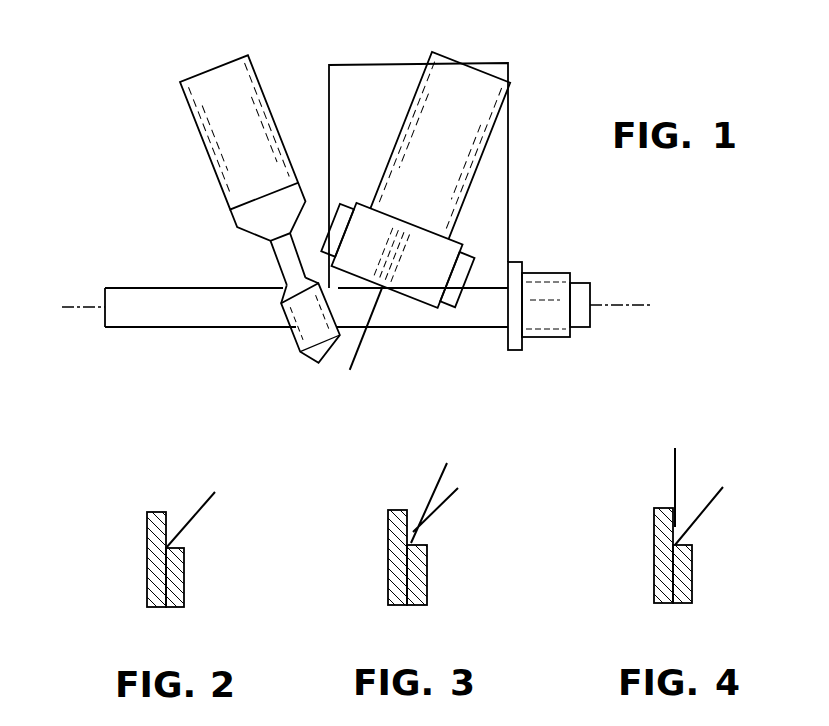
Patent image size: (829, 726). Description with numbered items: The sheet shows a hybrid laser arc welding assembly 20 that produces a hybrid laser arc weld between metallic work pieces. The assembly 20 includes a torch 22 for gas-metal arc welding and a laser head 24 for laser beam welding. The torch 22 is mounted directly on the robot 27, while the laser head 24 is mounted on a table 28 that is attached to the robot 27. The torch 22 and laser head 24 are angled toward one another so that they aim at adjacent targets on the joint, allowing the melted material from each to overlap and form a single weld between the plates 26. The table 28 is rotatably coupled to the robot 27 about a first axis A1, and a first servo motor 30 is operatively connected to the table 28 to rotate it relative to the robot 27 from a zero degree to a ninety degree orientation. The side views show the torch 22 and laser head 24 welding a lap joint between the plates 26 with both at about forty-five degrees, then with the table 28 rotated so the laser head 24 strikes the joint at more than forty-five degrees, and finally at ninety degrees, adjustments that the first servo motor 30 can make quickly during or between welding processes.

In FIG. 1, the hybrid laser arc welding assembly 20 is at (524, 74).
In FIG. 1, the torch 22 is at (203, 127).
In FIG. 1, the laser head 24 is at (462, 241).
In FIG. 2, the plates 26 is at (178, 598).
In FIG. 3, the plates 26 is at (417, 597).
In FIG. 4, the plates 26 is at (685, 595).
In FIG. 1, the robot 27 is at (271, 110).
In FIG. 1, the table 28 is at (361, 76).
In FIG. 1, the first servo motor 30 is at (592, 316).
In FIG. 1, the first axis A1 is at (95, 313).